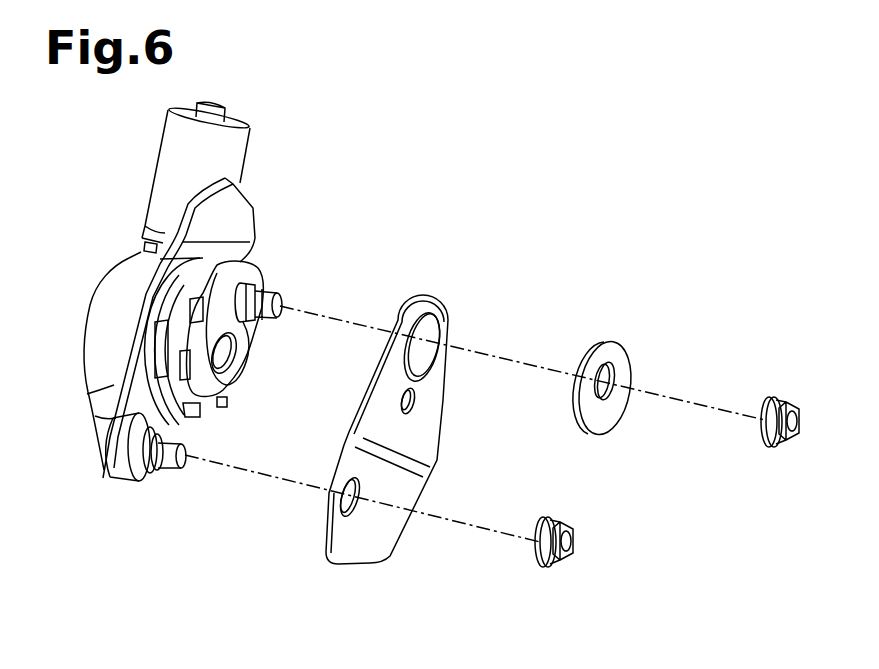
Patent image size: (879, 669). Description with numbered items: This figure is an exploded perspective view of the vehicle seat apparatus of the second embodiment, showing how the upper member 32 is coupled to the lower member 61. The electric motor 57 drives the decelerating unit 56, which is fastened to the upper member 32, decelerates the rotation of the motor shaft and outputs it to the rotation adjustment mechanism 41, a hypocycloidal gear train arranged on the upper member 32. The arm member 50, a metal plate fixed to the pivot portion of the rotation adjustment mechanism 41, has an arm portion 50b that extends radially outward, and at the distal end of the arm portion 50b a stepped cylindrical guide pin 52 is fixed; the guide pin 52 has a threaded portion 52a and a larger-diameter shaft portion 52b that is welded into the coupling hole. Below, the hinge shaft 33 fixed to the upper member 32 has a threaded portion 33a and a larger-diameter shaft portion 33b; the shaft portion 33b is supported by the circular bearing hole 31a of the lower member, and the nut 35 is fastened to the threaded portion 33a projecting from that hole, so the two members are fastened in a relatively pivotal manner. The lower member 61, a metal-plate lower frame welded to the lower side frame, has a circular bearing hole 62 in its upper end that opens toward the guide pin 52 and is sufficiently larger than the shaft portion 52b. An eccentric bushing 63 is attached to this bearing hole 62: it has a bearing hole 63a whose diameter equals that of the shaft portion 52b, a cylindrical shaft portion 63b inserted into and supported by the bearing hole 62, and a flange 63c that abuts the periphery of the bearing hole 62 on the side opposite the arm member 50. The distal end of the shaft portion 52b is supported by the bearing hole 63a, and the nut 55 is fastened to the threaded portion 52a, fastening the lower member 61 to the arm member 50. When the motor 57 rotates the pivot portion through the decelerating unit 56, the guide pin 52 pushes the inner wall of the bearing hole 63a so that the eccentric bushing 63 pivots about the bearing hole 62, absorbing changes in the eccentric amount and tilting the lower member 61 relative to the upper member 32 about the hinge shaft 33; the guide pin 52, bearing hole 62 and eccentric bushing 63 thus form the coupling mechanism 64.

The electric motor 57 is at (167, 157).
The upper member 32 is at (240, 215).
The decelerating unit 56 is at (97, 325).
The rotation adjustment mechanism 41 is at (130, 353).
The arm member 50 is at (267, 323).
The arm portion 50b is at (254, 274).
The guide pin 52 is at (283, 339).
The threaded portion 52a is at (298, 292).
The shaft portion 52b is at (244, 318).
The hinge shaft 33 is at (161, 480).
The threaded portion 33a is at (177, 470).
The shaft portion 33b is at (152, 472).
The coupling mechanism 64 is at (497, 233).
The lower member 61 is at (358, 415).
The bearing hole 62 is at (432, 312).
The bearing hole 31a is at (343, 496).
The eccentric bushing 63 is at (593, 393).
The bearing hole 63a is at (610, 396).
The shaft portion 63b is at (576, 402).
The flange 63c is at (598, 435).
The nut 55 is at (775, 447).
The nut 35 is at (556, 570).